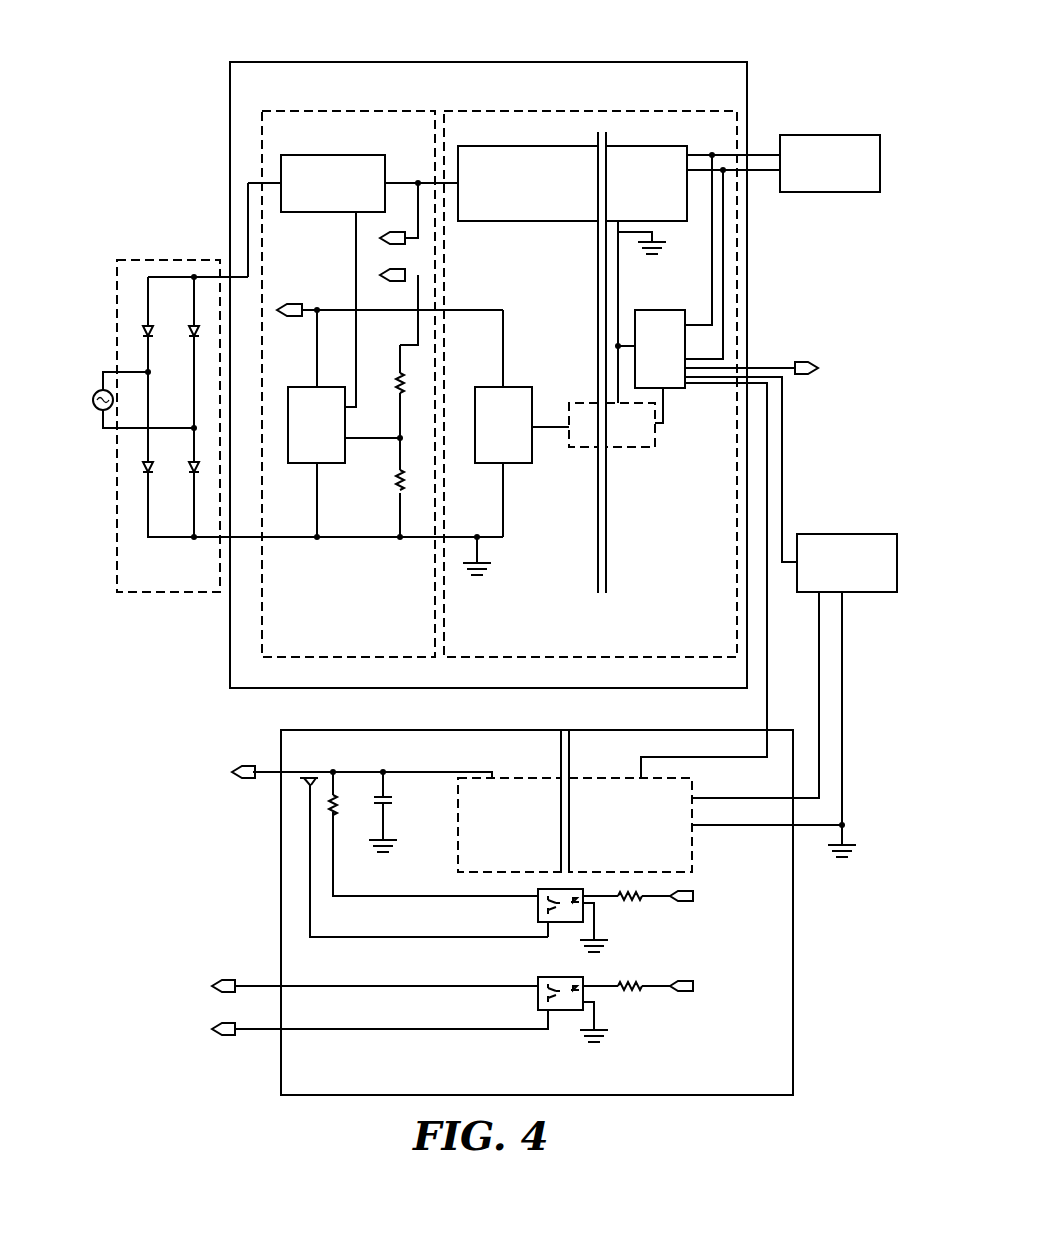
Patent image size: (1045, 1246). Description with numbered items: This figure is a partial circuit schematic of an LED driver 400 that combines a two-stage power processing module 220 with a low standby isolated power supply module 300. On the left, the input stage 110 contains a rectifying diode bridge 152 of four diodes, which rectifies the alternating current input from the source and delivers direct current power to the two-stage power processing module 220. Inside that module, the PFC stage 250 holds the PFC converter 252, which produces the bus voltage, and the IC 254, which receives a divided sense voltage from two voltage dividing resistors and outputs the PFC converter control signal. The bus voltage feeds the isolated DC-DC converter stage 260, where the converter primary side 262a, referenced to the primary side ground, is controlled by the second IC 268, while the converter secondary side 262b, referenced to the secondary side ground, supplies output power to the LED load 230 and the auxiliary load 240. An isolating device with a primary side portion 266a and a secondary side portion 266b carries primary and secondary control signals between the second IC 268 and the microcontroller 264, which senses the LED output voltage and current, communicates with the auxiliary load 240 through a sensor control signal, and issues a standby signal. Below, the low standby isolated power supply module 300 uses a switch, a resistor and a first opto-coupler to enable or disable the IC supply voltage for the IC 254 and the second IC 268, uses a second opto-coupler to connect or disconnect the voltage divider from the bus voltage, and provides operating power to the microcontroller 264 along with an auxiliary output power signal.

The input stage 110 is at (165, 593).
The rectifier bridge 152 is at (289, 382).
The two-stage power processing module 220 is at (233, 690).
The LED load 230 is at (808, 135).
The auxiliary load 240 is at (876, 534).
The PFC stage 250 is at (350, 110).
The PFC converter 252 is at (312, 155).
The integrated circuit (IC) 254 is at (326, 455).
The isolated DC-DC converter stage 260 is at (577, 111).
The primary side of the isolated DC-DC converter 262a is at (589, 199).
The secondary side of the isolated DC-DC converter 262b is at (667, 199).
The microcontroller 264 is at (670, 382).
The primary side portion of the isolating device 266a is at (590, 447).
The secondary side portion of the isolating device 266b is at (625, 447).
The second IC 268 is at (513, 455).
The low standby isolated power supply module 300 is at (769, 1078).
The LED driver system 400 is at (152, 1045).